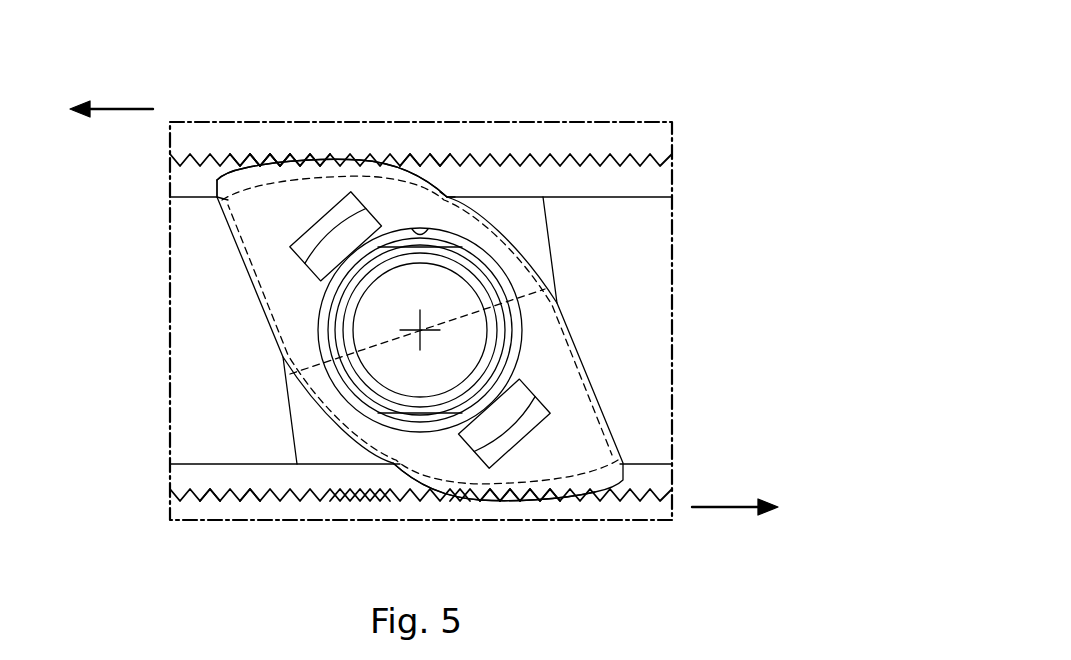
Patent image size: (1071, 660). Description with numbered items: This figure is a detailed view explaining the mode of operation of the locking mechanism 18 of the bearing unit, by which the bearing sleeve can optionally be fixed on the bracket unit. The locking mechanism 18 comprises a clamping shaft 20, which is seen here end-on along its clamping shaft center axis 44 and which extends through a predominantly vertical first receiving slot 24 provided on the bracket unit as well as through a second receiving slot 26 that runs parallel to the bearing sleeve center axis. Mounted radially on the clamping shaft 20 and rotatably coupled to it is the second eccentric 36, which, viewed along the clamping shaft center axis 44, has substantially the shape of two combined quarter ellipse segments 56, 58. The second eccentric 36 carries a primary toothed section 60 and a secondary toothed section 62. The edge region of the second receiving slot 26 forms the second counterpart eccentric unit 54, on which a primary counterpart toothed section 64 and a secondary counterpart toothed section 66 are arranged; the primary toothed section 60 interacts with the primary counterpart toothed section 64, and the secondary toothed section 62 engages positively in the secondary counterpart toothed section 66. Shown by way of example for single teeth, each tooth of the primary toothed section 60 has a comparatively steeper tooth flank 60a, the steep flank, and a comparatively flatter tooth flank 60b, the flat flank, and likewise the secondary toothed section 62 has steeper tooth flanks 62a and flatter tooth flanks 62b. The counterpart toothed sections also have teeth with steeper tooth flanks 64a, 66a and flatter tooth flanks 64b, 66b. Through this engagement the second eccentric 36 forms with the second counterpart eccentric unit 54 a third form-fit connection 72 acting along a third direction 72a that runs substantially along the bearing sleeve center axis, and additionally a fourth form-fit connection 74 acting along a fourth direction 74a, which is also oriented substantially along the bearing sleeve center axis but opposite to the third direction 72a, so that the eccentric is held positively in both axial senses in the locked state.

The locking mechanism 18 is at (565, 70).
The clamping shaft 20 is at (450, 291).
The first receiving slot 24 is at (535, 220).
The second receiving slot 26 is at (204, 414).
The second eccentric 36 is at (587, 457).
The clamping shaft center axis 44 is at (421, 329).
The second counterpart eccentric unit 54 is at (640, 153).
The quarter ellipse segment 56 is at (598, 406).
The quarter ellipse segment 58 is at (447, 197).
The primary toothed section 60 is at (305, 158).
The steeper tooth flank 60a is at (205, 182).
The flatter tooth flank 60b is at (224, 165).
The secondary toothed section 62 is at (540, 496).
The steeper tooth flank 62a is at (490, 500).
The flatter tooth flank 62b is at (460, 500).
The primary counterpart toothed section 64 is at (262, 158).
The steeper tooth flank 64a is at (446, 168).
The flatter tooth flank 64b is at (411, 167).
The secondary counterpart toothed section 66 is at (360, 500).
The steeper tooth flank 66a is at (208, 497).
The flatter tooth flank 66b is at (249, 497).
The third form-fit connection 72 is at (352, 145).
The third direction 72a is at (110, 109).
The fourth form-fit connection 74 is at (514, 465).
The fourth direction 74a is at (735, 506).